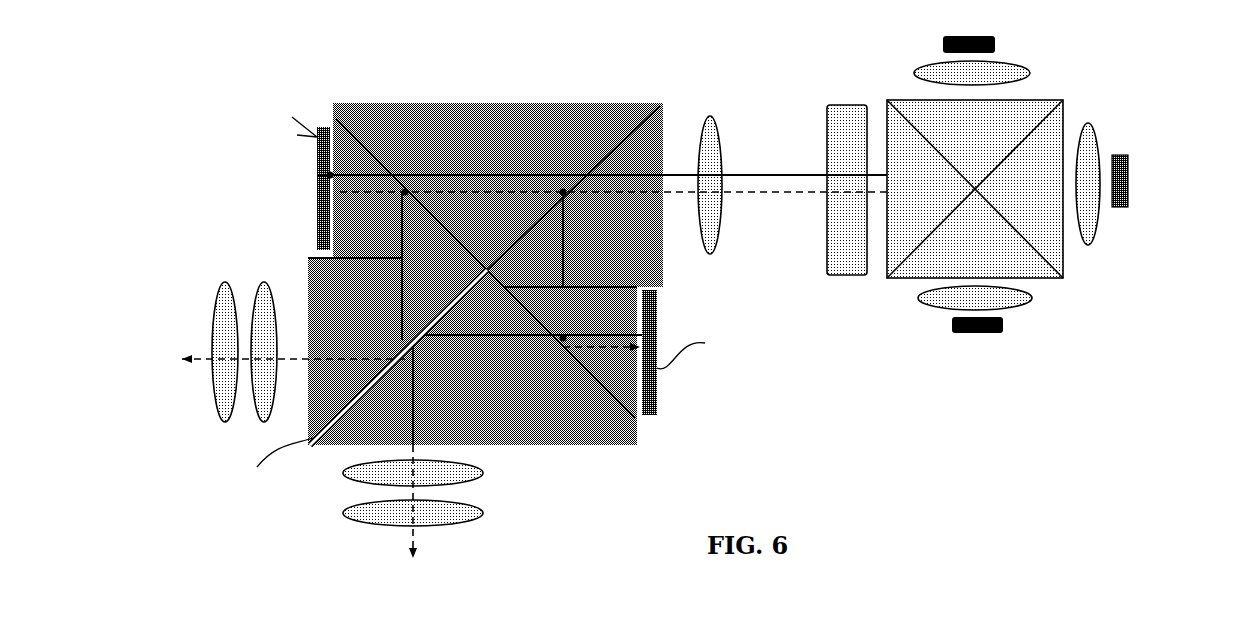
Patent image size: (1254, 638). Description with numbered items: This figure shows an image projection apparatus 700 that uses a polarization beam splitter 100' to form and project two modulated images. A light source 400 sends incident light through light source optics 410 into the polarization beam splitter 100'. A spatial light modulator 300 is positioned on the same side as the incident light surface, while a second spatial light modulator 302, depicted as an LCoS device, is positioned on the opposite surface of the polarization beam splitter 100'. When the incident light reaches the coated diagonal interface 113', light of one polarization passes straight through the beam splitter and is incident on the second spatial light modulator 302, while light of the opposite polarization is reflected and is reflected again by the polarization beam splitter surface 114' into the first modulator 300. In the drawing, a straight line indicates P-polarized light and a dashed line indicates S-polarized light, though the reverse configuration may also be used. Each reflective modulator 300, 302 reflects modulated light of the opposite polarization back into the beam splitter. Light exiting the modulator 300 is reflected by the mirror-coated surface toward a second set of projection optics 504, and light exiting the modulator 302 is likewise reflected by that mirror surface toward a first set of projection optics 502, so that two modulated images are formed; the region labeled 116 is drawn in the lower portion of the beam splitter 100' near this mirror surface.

The projection display system 700 is at (212, 230).
The polarizing beam splitter assembly 100' is at (534, 303).
The polarizing coating surface 113' is at (573, 159).
The polarizing coating surface 114' is at (411, 167).
The reflective surface 116 is at (413, 362).
The LCoS right panel 302 is at (314, 227).
The LCoS left panel 300 is at (657, 395).
The collimating lens 410 is at (718, 240).
The light source color combiner cube 400 is at (1080, 88).
The left projection lens group 502 is at (210, 322).
The bottom projection lens group 504 is at (480, 515).